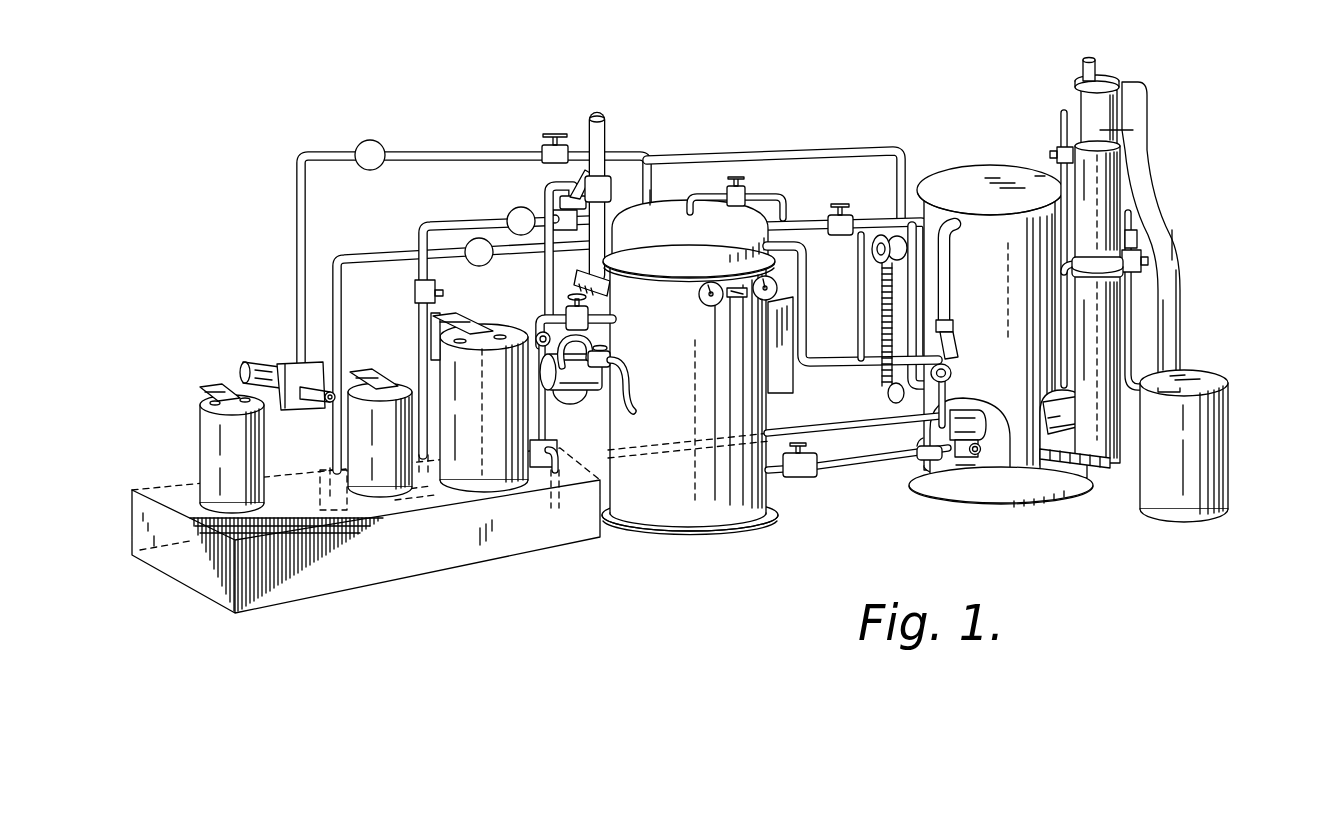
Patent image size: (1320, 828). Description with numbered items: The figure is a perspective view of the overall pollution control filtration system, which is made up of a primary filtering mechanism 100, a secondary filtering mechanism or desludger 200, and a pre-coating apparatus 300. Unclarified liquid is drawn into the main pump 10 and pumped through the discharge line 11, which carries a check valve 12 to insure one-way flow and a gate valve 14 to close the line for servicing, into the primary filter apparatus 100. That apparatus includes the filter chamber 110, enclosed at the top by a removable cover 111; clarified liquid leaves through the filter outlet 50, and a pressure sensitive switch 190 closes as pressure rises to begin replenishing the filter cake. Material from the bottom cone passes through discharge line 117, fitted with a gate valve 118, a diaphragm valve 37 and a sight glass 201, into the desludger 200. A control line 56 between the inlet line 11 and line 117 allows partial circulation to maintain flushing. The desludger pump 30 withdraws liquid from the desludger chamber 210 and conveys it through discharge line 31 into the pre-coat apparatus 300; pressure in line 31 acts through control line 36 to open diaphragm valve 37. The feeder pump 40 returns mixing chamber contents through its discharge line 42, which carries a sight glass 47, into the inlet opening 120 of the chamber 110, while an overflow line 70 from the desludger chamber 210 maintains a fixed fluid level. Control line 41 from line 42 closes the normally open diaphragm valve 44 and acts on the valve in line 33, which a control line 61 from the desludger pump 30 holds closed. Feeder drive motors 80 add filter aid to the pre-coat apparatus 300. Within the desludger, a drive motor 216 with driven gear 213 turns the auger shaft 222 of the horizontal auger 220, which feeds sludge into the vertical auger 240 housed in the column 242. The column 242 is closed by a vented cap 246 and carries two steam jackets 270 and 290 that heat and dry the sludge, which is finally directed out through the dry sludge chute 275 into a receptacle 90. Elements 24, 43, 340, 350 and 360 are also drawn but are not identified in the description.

The main pump 10 is at (277, 360).
The discharge line 11 is at (480, 148).
The check valve 12 is at (372, 140).
The gate valve 14 is at (555, 132).
The pump 24 is at (590, 404).
The desludger pump 30 is at (972, 422).
The discharge line 31 is at (378, 262).
The line 33 is at (458, 218).
The control line 36 is at (947, 253).
The diaphragm valve 37 is at (955, 340).
The feeder pump 40 is at (565, 428).
The control line 41 is at (552, 288).
The feeder pump discharge line 42 is at (528, 407).
The gauge 43 is at (526, 208).
The diaphragm valve 44 is at (606, 196).
The sight glass 47 is at (538, 326).
The filter outlet 50 is at (607, 127).
The control line 56 is at (806, 293).
The control line 61 is at (686, 157).
The overflow line 70 is at (799, 425).
The feeder drive motors 80 is at (210, 386).
The receptacle 90 is at (1230, 450).
The primary filtering mechanism 100 is at (692, 369).
The filter chamber 110 is at (672, 500).
The cover 111 is at (666, 213).
The discharge line 117 is at (836, 466).
The gate valve 118 is at (790, 478).
The inlet opening 120 is at (612, 318).
The pressure sensitive switch 190 is at (738, 300).
The secondary filtering mechanism 200 is at (1000, 344).
The sight glass 201 is at (953, 376).
The desludger chamber 210 is at (997, 215).
The driven gear 213 is at (883, 402).
The drive motor 216 is at (870, 248).
The horizontal auger 220 is at (1045, 437).
The auger shaft 222 is at (902, 444).
The vertical auger 240 is at (1138, 278).
The column 242 is at (1121, 442).
The cap 246 is at (1108, 80).
The steam jacket 270 is at (1121, 222).
The dry sludge chute 275 is at (1181, 276).
The steam jacket 290 is at (1120, 342).
The pre-coating apparatus 300 is at (512, 615).
The conduit 340 is at (428, 376).
The canister 350 is at (346, 443).
The canister 360 is at (198, 443).